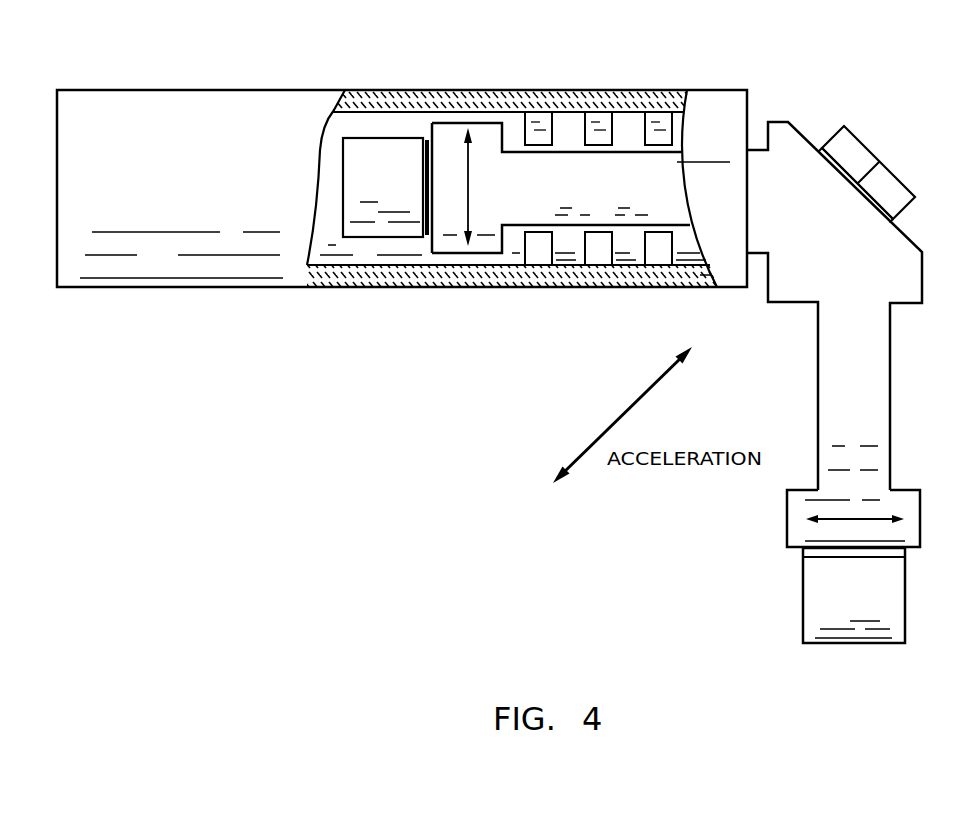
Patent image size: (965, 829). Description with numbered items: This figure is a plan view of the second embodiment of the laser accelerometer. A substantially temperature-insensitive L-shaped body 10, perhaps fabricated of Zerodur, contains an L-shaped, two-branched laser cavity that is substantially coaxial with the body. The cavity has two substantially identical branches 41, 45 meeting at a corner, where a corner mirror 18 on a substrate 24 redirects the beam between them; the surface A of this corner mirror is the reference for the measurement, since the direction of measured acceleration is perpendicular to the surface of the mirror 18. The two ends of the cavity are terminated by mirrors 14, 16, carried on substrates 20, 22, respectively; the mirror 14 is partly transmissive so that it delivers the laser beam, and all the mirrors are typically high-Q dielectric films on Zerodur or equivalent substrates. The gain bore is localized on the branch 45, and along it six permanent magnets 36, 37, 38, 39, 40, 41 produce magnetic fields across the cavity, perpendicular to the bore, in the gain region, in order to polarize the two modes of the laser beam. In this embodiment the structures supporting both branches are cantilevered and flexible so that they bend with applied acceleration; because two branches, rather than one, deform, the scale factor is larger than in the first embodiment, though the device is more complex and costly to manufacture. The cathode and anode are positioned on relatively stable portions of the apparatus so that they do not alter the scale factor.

The L-shaped body 10 is at (870, 92).
The mirror 14 is at (427, 235).
The mirror 16 is at (890, 556).
The corner mirror 18 is at (822, 148).
The substrate 20 is at (397, 176).
The substrate 22 is at (840, 603).
The substrate 24 is at (897, 190).
The permanent magnet 36 is at (541, 118).
The permanent magnet 37 is at (540, 258).
The permanent magnet 38 is at (598, 118).
The permanent magnet 39 is at (600, 258).
The permanent magnet 40 is at (660, 118).
The branch 41 is at (660, 258).
The branch 45 is at (447, 165).
The reflecting surface A is at (881, 160).